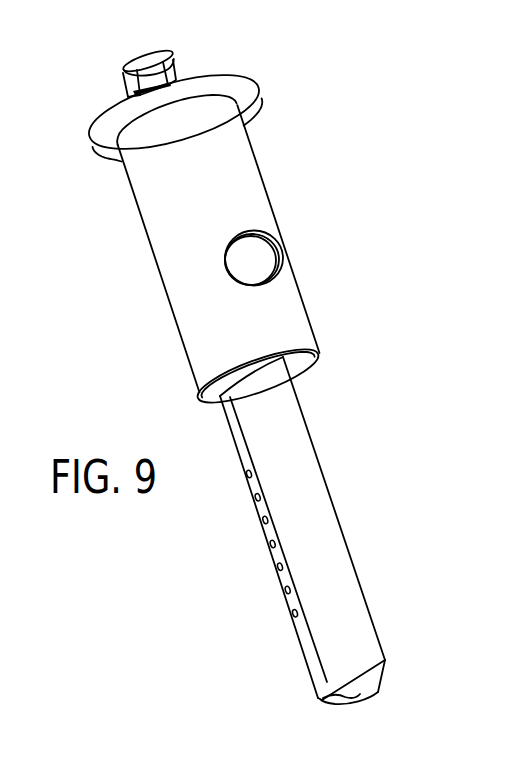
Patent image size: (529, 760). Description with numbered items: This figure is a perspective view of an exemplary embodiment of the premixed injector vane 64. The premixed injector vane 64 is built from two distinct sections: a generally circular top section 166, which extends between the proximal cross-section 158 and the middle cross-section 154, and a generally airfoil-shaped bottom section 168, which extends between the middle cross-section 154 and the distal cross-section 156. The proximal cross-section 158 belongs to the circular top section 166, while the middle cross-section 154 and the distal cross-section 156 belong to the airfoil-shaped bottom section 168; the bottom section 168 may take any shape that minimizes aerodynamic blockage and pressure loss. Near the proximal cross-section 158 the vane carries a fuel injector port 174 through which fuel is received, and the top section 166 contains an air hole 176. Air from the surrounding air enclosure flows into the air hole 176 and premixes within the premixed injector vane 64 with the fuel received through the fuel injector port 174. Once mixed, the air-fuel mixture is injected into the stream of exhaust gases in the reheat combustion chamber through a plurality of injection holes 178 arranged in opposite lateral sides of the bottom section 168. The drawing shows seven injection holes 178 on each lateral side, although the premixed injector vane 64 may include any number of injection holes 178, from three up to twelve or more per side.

The premixed injector vane 64 is at (84, 78).
The fuel injector port 174 is at (140, 62).
The proximal cross-section 158 is at (84, 137).
The top section 166 is at (289, 171).
The air hole 176 is at (258, 263).
The middle cross-section 154 is at (181, 411).
The bottom section 168 is at (372, 492).
The injection holes 178 is at (293, 613).
The distal cross-section 156 is at (297, 708).